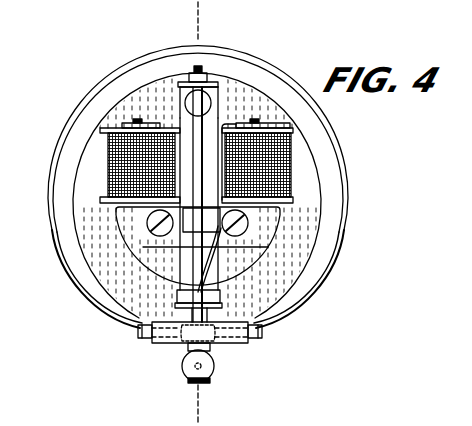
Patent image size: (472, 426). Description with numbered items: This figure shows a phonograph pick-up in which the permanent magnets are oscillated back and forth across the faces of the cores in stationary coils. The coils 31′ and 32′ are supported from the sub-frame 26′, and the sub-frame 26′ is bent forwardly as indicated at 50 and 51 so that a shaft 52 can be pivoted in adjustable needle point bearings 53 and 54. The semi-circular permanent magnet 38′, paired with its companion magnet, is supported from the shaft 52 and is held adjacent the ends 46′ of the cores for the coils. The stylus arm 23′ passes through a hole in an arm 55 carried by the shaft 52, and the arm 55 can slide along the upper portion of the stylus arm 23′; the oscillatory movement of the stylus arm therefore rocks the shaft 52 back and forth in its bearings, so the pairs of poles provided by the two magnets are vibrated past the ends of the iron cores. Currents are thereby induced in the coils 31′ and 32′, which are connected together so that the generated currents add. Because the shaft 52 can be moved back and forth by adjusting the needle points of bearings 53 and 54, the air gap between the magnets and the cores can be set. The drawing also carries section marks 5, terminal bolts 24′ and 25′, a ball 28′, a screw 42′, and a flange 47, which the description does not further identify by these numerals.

The section line 5- 5 is at (165, 22).
The stylus arm 23′ is at (202, 268).
The terminal bolt 24′ is at (142, 339).
The terminal bolt 25′ is at (259, 339).
The sub-frame 26′ is at (228, 93).
The ball 28′ is at (186, 103).
The coil 31′ is at (122, 158).
The coil 32′ is at (276, 157).
The permanent magnet 38′ is at (150, 250).
The screw and bar 42′ is at (152, 223).
The ends of the cores 46′ is at (120, 203).
The right coil flange 47 is at (285, 203).
The forwardly bent portion of sub-frame 50 is at (185, 82).
The forwardly bent portion of sub-frame 51 is at (195, 322).
The shaft 52 is at (200, 128).
The needle point bearing 53 is at (200, 74).
The needle point bearing 54 is at (221, 307).
The arm 55 is at (248, 223).